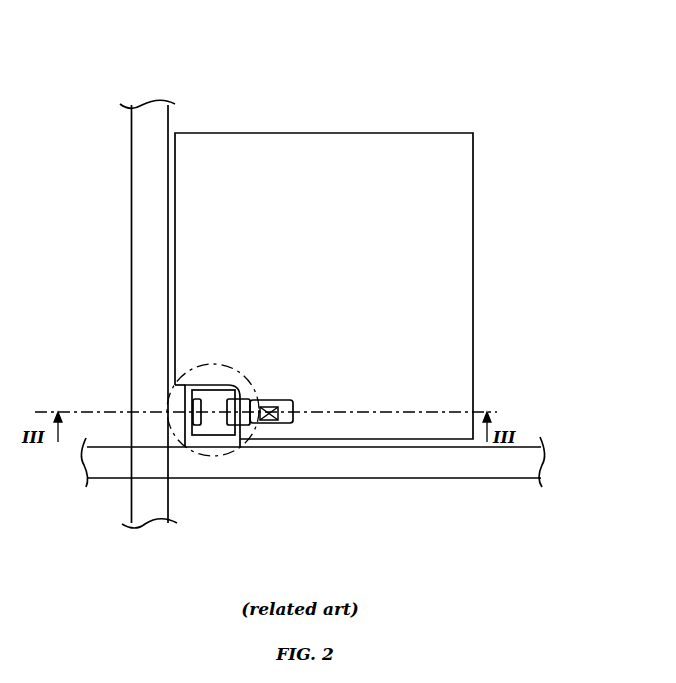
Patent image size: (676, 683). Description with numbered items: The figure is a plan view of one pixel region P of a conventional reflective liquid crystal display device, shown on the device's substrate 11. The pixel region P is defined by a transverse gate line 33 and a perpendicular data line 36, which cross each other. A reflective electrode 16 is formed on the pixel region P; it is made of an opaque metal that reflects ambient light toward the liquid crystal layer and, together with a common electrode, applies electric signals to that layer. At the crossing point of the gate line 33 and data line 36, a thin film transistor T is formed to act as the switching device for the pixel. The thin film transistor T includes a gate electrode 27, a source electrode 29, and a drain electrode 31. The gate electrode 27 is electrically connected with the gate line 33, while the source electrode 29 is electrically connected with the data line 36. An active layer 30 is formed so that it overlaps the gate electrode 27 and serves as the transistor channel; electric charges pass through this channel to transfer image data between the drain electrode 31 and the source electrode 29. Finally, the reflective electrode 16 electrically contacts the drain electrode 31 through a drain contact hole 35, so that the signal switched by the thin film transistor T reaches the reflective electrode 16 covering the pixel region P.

The substrate 11 is at (472, 100).
The pixel region P is at (485, 218).
The reflective electrode 16 is at (465, 283).
The data line 36 is at (143, 169).
The gate electrode 27 is at (217, 384).
The active layer 30 is at (193, 392).
The source electrode 29 is at (197, 402).
The drain electrode 31 is at (285, 424).
The drain contact hole 35 is at (273, 421).
The gate line 33 is at (508, 472).
The thin film transistor T is at (220, 457).